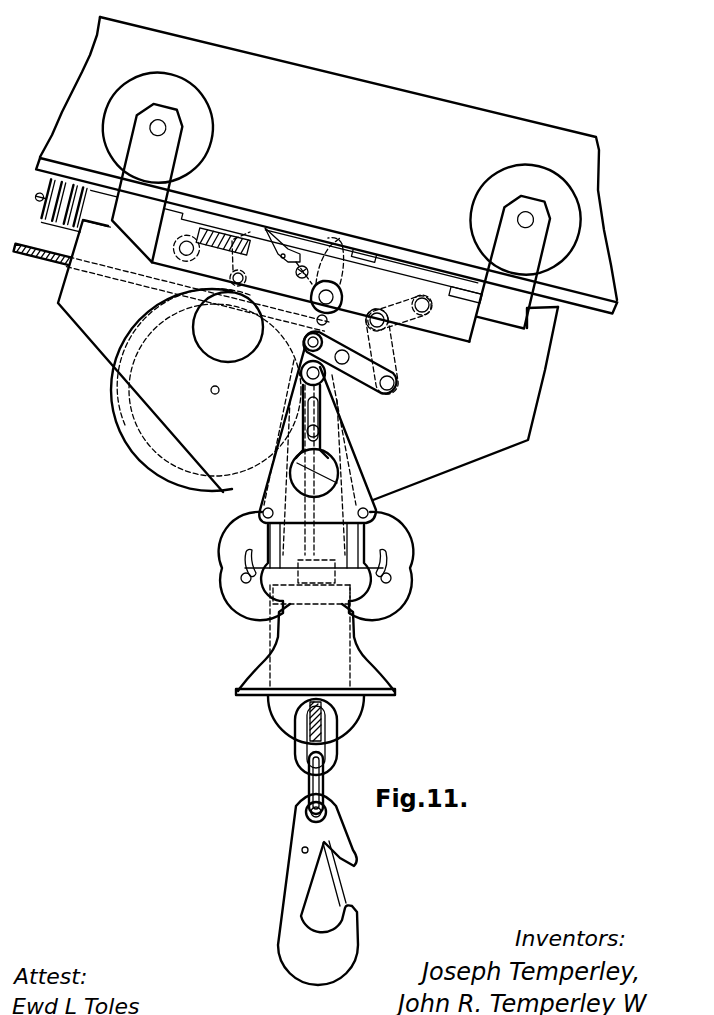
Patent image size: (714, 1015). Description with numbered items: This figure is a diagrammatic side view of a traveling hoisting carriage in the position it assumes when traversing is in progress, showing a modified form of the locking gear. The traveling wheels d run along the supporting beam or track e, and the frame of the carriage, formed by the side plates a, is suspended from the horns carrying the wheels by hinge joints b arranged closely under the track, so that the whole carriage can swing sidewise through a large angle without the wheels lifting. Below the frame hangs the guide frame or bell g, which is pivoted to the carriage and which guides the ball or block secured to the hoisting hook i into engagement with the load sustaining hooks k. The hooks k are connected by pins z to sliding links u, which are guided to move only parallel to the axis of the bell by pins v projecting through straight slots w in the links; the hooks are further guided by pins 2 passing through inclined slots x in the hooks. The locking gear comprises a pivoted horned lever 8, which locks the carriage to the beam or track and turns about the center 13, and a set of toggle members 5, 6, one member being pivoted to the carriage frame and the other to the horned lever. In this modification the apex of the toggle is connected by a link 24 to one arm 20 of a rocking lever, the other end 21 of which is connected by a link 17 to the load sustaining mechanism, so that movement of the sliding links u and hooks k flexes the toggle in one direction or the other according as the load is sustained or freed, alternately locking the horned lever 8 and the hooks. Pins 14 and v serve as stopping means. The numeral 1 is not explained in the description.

The traveling wheels d is at (195, 128).
The supporting beam or track e is at (328, 158).
The hinge joints b is at (527, 314).
The side plates a is at (286, 337).
The pivoted horned lever 8 is at (324, 266).
The center 13 is at (239, 255).
The pins 14 is at (317, 320).
The toggle member 6 is at (352, 303).
The toggle member 5 is at (404, 304).
The other end of rocking lever 21 is at (329, 345).
The link 24 is at (388, 356).
The link 17 is at (302, 371).
The arm of rocking lever 20 is at (385, 392).
The straight slots w is at (319, 415).
The pins v is at (320, 432).
The sliding links u is at (355, 476).
The pins z is at (260, 512).
The inclined slots x is at (242, 560).
The guide pins 2 is at (240, 578).
The pin 1 is at (392, 578).
The load sustaining hooks k is at (236, 606).
The guide frame or bell g is at (315, 652).
The hoisting hook i is at (292, 861).